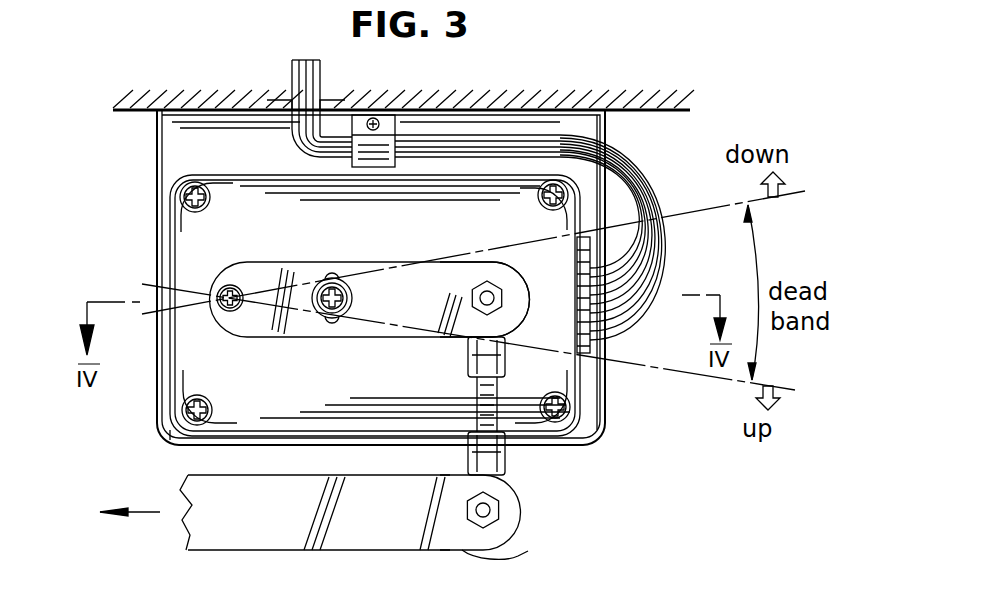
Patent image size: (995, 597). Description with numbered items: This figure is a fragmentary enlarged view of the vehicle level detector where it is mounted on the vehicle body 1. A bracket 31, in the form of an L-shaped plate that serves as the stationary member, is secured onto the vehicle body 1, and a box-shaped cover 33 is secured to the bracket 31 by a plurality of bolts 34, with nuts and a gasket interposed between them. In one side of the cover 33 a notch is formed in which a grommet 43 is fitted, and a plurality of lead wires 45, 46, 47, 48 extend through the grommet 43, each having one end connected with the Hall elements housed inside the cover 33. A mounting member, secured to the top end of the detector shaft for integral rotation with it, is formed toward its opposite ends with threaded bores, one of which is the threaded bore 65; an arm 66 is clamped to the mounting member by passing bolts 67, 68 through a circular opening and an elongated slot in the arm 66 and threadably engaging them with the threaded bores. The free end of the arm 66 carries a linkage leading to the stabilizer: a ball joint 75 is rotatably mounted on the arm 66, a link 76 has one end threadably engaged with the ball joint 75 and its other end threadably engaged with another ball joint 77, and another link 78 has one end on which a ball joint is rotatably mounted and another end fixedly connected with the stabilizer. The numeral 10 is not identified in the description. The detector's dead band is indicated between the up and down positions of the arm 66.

The vehicle body 1 is at (578, 97).
The switch assembly 10 is at (176, 424).
The bracket 31 is at (603, 428).
The cover 33 is at (195, 248).
The bolts 34 is at (181, 195).
The grommet 43 is at (588, 235).
The lead wire 45 is at (648, 230).
The lead wire 46 is at (642, 286).
The lead wire 47 is at (634, 300).
The lead wire 48 is at (620, 332).
The threaded bore 65 is at (338, 322).
The arm 66 is at (372, 326).
The bolt 67 is at (235, 290).
The bolt 68 is at (340, 288).
The ball joint 75 is at (497, 263).
The link 76 is at (477, 403).
The ball joint 77 is at (518, 556).
The link 78 is at (285, 533).